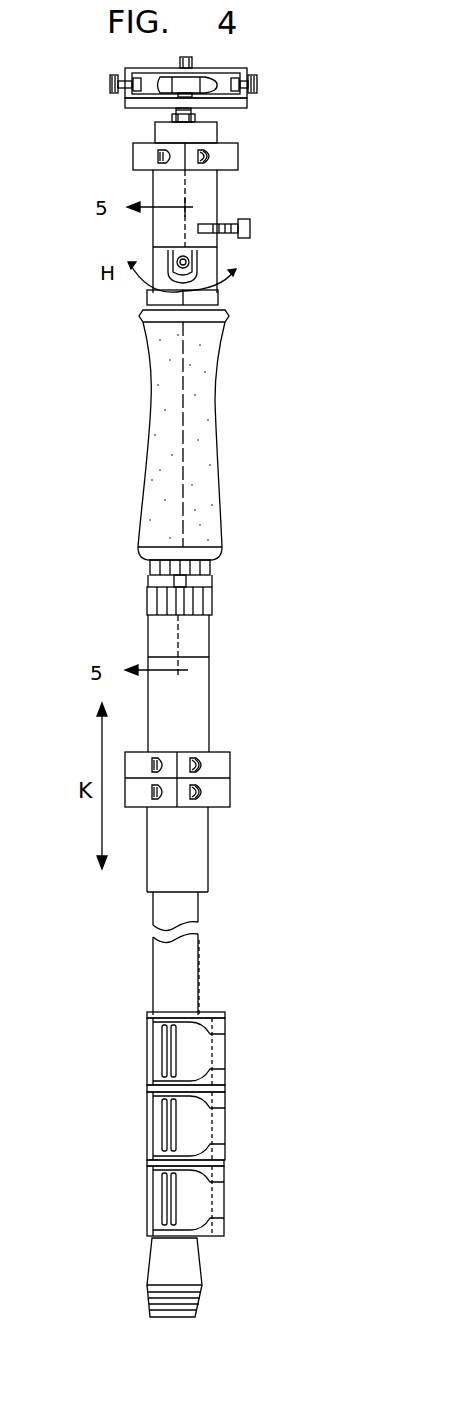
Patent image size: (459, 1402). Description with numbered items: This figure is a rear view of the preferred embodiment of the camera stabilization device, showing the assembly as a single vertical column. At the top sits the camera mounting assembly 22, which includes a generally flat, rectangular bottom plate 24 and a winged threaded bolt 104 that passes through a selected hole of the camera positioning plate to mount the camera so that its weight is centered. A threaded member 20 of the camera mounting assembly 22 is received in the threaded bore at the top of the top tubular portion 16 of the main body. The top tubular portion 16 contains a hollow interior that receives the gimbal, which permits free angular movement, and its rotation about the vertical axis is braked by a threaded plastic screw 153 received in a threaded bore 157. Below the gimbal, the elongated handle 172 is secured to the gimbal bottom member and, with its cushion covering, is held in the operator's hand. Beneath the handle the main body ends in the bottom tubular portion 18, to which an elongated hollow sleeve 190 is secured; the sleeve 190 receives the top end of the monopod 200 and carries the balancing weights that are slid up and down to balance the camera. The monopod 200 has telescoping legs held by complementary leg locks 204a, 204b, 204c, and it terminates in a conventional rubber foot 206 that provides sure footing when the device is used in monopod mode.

The camera mounting assembly 22 is at (128, 66).
The winged threaded bolt 104 is at (208, 88).
The bottom plate 24 is at (135, 108).
The threaded member 20 is at (195, 117).
The top tubular portion 16 is at (209, 186).
The threaded plastic screw 153 is at (250, 229).
The threaded bore 157 is at (226, 232).
The elongated handle 172 is at (233, 396).
The bottom tubular portion 18 is at (202, 632).
The elongated hollow sleeve 190 is at (200, 712).
The monopod 200 is at (136, 984).
The leg lock 204a is at (152, 1048).
The leg lock 204b is at (152, 1120).
The leg lock 204c is at (155, 1198).
The rubber foot 206 is at (163, 1262).